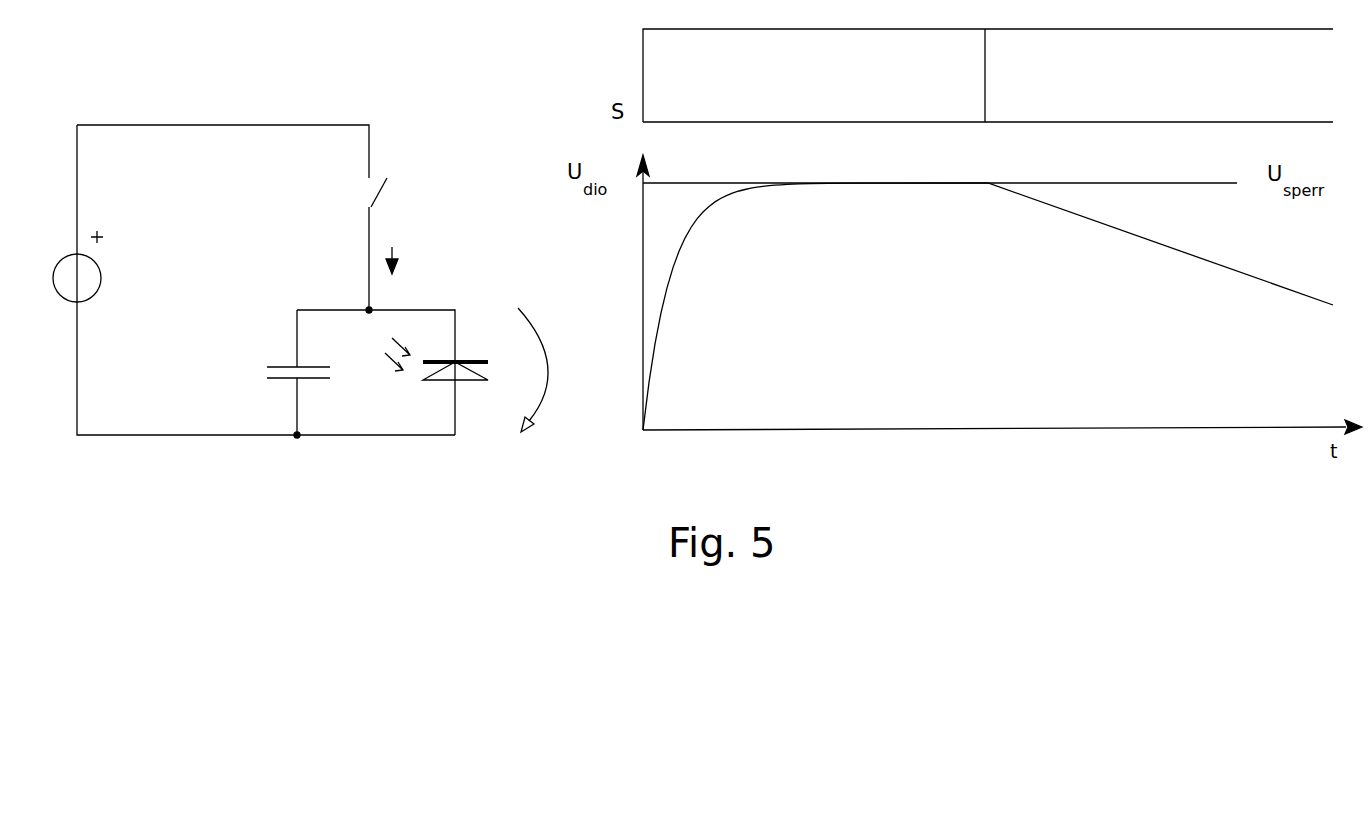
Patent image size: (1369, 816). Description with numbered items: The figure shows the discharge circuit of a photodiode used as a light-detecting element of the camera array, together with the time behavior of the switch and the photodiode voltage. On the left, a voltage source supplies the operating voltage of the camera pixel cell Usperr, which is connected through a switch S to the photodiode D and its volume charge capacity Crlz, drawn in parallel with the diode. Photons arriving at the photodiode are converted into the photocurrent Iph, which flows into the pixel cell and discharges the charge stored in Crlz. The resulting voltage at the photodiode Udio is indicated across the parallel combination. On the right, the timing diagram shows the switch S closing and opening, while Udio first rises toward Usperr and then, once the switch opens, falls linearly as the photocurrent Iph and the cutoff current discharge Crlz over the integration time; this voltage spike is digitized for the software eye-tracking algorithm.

The operating voltage of the camera pixel cell Usperr is at (116, 266).
The switch S is at (389, 187).
The photocurrent Iph is at (411, 269).
The volume charge capacity of the photodiode Crlz is at (321, 372).
The photodiode D is at (451, 359).
The voltage at the photodiode Udio is at (552, 370).